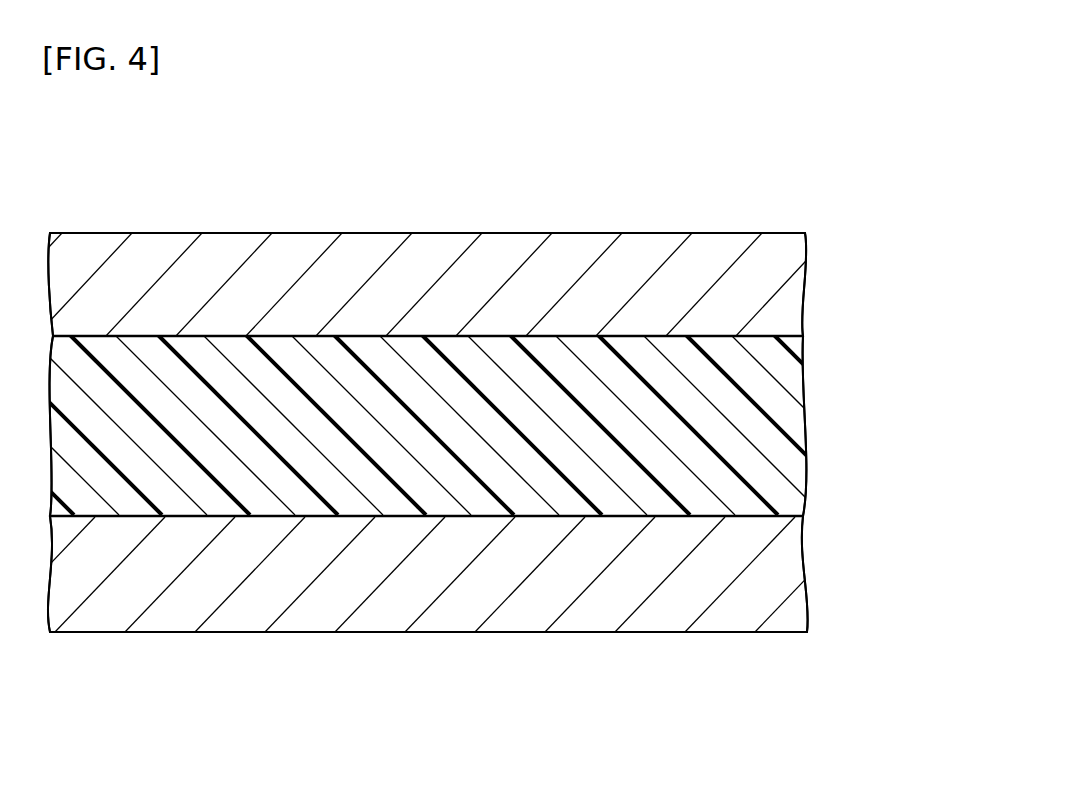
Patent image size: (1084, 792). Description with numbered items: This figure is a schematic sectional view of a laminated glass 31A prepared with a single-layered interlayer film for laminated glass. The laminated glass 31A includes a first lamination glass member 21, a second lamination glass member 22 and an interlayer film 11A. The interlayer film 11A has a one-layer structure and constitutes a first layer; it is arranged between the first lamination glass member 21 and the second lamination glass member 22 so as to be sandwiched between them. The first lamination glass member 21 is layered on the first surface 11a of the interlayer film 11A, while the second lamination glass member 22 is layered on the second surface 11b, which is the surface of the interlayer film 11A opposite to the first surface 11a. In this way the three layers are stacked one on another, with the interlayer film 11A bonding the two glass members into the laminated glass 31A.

The laminated glass 31A is at (213, 192).
The second lamination glass member 22 is at (806, 271).
The interlayer film 11A is at (328, 337).
The second surface 11b is at (443, 336).
The first surface 11a is at (443, 517).
The first lamination glass member 21 is at (806, 553).